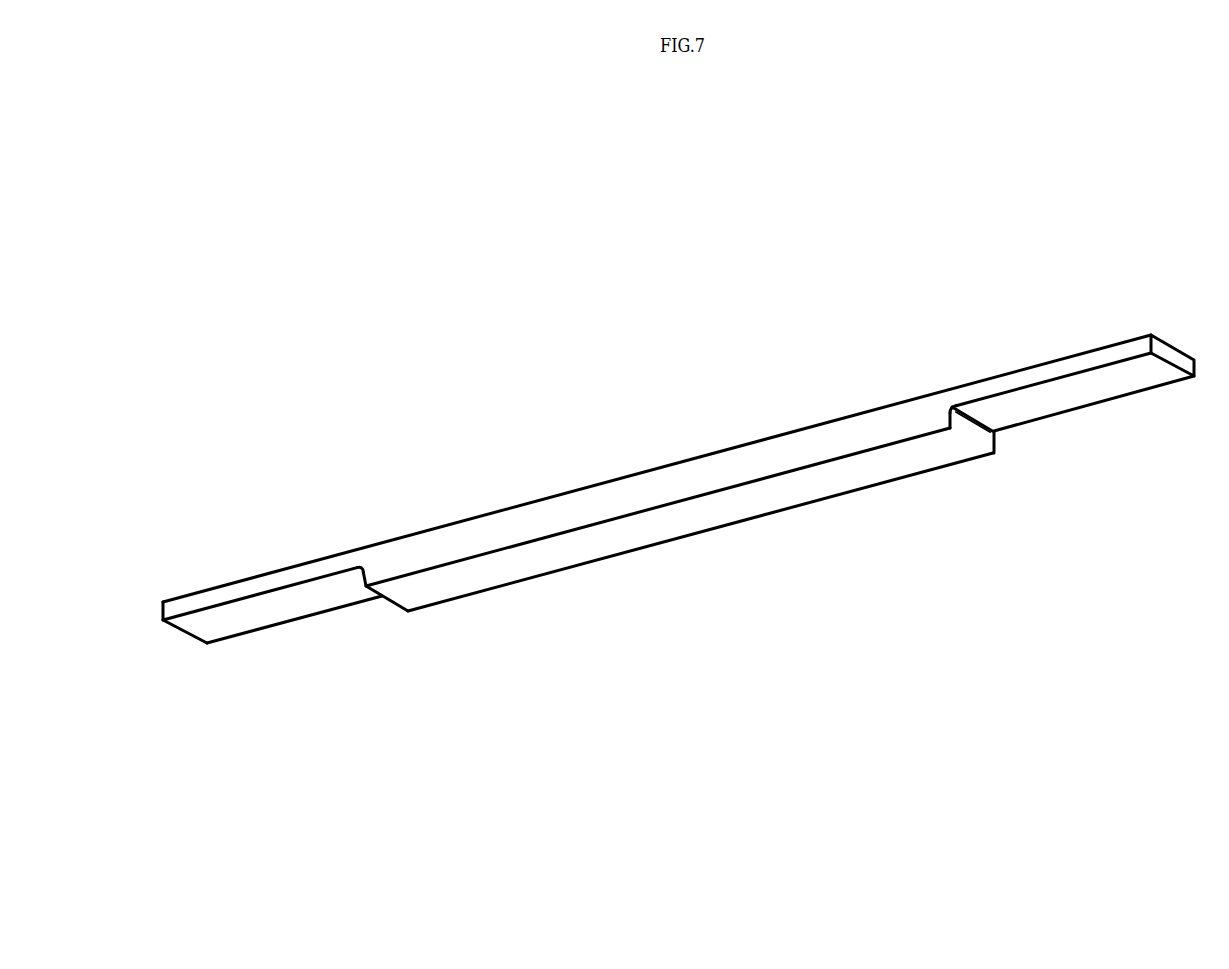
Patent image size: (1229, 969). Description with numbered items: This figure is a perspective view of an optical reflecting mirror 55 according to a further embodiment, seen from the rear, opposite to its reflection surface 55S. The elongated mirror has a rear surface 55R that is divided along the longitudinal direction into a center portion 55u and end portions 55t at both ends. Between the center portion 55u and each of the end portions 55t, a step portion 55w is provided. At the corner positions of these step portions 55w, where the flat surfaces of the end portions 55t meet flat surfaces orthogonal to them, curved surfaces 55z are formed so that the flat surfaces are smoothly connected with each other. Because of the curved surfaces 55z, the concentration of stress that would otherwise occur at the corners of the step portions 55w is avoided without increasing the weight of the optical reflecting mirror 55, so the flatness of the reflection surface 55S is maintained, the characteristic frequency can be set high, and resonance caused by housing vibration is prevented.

The optical reflecting mirror 55 is at (803, 219).
The reflection surface 55S is at (677, 436).
The rear surface 55R is at (678, 598).
The end portions 55t is at (391, 614).
The center portion 55u is at (989, 466).
The step portions 55w is at (408, 634).
The curved surfaces 55z is at (364, 564).